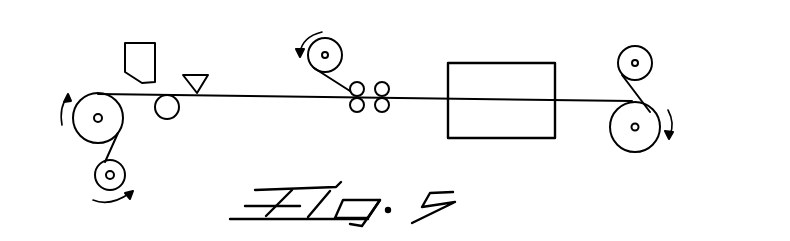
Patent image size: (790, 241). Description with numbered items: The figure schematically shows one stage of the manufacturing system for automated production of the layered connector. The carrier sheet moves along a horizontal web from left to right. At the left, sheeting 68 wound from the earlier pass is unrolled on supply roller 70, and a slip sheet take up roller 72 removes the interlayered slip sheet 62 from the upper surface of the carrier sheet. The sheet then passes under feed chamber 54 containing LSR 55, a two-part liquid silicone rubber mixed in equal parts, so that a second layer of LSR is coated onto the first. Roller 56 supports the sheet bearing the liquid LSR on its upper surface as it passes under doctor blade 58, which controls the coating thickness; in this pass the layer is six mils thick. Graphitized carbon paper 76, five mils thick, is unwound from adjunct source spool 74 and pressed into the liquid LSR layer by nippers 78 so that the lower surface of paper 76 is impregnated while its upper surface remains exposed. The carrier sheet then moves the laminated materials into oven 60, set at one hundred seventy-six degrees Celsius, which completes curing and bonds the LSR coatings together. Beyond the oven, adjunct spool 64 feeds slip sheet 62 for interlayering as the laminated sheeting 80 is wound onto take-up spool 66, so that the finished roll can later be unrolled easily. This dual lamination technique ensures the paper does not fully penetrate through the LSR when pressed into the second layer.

The feed chamber 54 is at (127, 65).
The LSR 55 is at (147, 43).
The roller 56 is at (178, 111).
The doctor blade 58 is at (197, 74).
The oven 60 is at (505, 70).
The slip sheet 62 is at (635, 63).
The adjunct spool 64 is at (645, 70).
The take-up spool 66 is at (635, 127).
The rolled sheeting 68 is at (87, 130).
The supply roller 70 is at (98, 118).
The slip sheet take up roller 72 is at (110, 175).
The adjunct source spool 74 is at (325, 55).
The graphitized carbon paper 76 is at (342, 60).
The nippers 78 is at (383, 112).
The laminated sheeting 80 is at (642, 142).